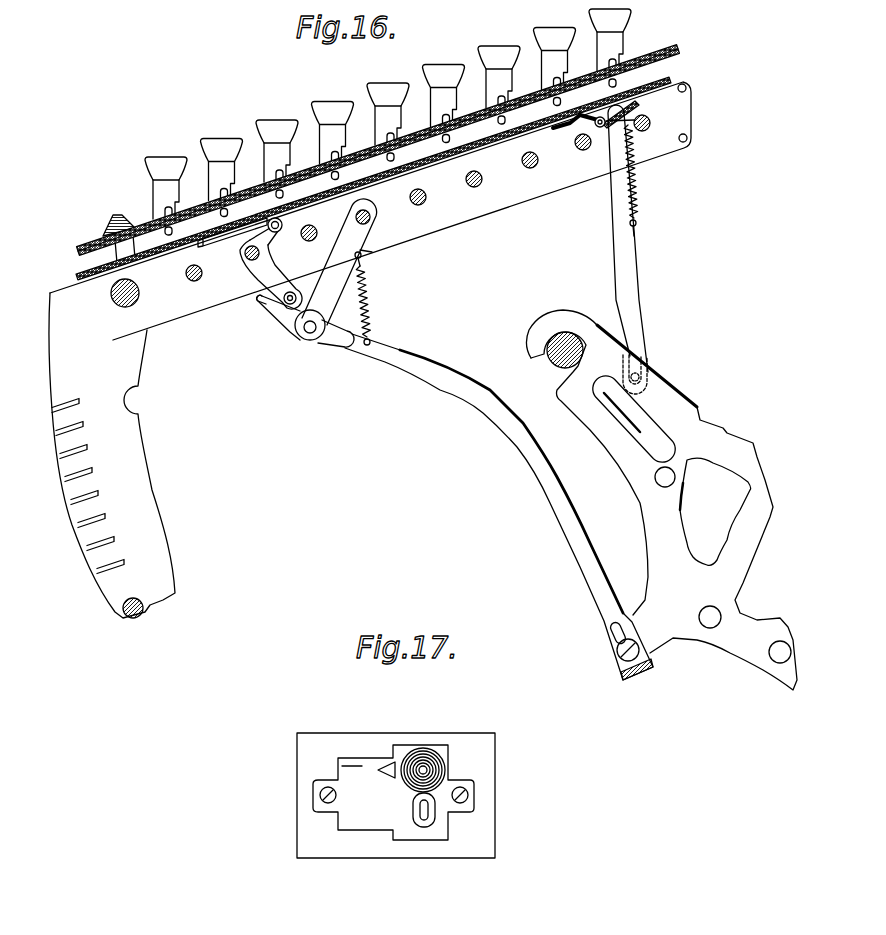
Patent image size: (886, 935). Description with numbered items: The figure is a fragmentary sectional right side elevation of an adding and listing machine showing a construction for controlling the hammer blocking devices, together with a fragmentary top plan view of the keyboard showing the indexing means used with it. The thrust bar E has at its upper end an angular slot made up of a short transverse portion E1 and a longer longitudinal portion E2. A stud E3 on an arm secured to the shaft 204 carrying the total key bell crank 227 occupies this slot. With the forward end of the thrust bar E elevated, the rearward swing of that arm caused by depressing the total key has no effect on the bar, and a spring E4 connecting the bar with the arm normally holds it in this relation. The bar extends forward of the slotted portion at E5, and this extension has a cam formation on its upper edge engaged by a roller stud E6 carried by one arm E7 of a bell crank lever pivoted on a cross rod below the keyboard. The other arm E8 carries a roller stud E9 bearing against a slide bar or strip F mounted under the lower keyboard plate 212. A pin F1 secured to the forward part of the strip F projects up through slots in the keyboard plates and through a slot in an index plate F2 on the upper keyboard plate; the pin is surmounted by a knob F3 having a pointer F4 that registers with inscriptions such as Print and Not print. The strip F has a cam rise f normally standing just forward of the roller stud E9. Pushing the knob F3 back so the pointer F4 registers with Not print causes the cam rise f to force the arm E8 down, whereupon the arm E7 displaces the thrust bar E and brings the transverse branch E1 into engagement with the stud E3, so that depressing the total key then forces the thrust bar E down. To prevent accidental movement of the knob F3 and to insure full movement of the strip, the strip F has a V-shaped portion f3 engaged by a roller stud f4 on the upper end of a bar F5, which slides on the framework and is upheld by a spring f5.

In FIG. 16, the slide bar or strip F is at (455, 155).
In FIG. 16, the pin F1 is at (140, 239).
In FIG. 16, the knob F3 is at (110, 222).
In FIG. 17, the knob F3 is at (447, 764).
In FIG. 16, the lower keyboard plate 212 is at (670, 80).
In FIG. 16, the cam rise f is at (215, 244).
In FIG. 16, the V-shaped portion f3 is at (577, 127).
In FIG. 16, the roller stud f4 is at (626, 110).
In FIG. 16, the spring f5 is at (643, 193).
In FIG. 16, the bar F5 is at (641, 292).
In FIG. 16, the thrust bar E is at (493, 415).
In FIG. 16, the short portion of angular slot E1 is at (326, 329).
In FIG. 16, the longer portion of angular slot E2 is at (332, 348).
In FIG. 16, the stud E3 is at (304, 341).
In FIG. 16, the spring E4 is at (367, 300).
In FIG. 16, the forward extension of thrust bar E5 is at (288, 314).
In FIG. 16, the roller stud E6 is at (265, 303).
In FIG. 16, the arm of bell crank lever E7 is at (283, 270).
In FIG. 16, the arm of bell crank lever E8 is at (271, 242).
In FIG. 16, the roller stud E9 is at (283, 225).
In FIG. 16, the shaft 204 is at (371, 218).
In FIG. 16, the total key bell crank 227 is at (367, 251).
In FIG. 17, the index plate F2 is at (406, 843).
In FIG. 17, the pointer F4 is at (393, 762).